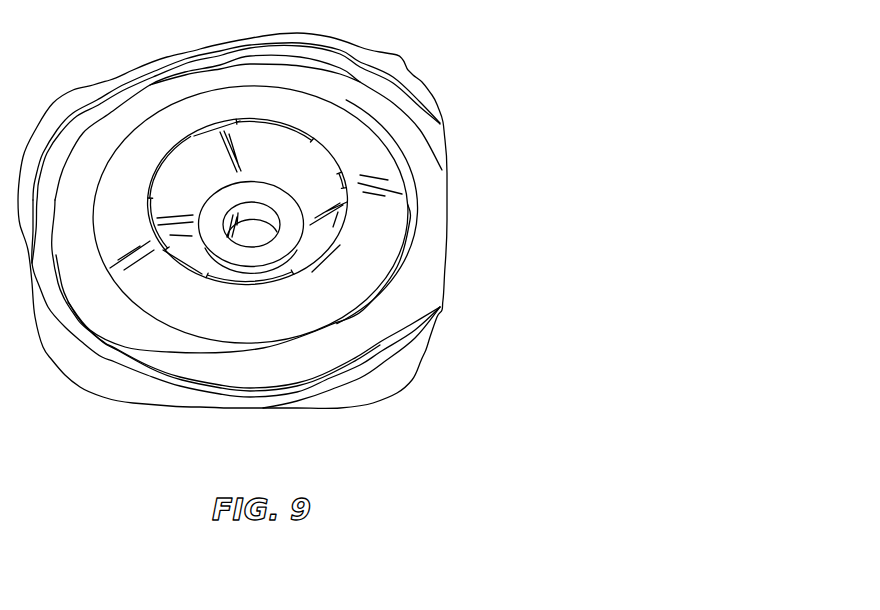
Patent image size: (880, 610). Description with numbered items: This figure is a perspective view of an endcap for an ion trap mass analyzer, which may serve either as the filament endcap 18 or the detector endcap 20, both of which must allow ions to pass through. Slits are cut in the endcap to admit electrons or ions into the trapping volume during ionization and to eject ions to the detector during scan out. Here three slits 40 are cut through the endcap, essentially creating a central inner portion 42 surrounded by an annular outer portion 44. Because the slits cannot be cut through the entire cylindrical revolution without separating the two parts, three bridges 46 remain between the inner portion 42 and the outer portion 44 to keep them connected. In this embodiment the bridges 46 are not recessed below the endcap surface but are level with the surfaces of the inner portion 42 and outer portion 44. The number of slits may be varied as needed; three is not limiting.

The filament endcap 18 is at (285, 220).
The detector endcap 20 is at (418, 260).
The slits 40 is at (326, 140).
The inner portion 42 is at (312, 202).
The outer portion 44 is at (380, 231).
The bridges 46 is at (194, 137).